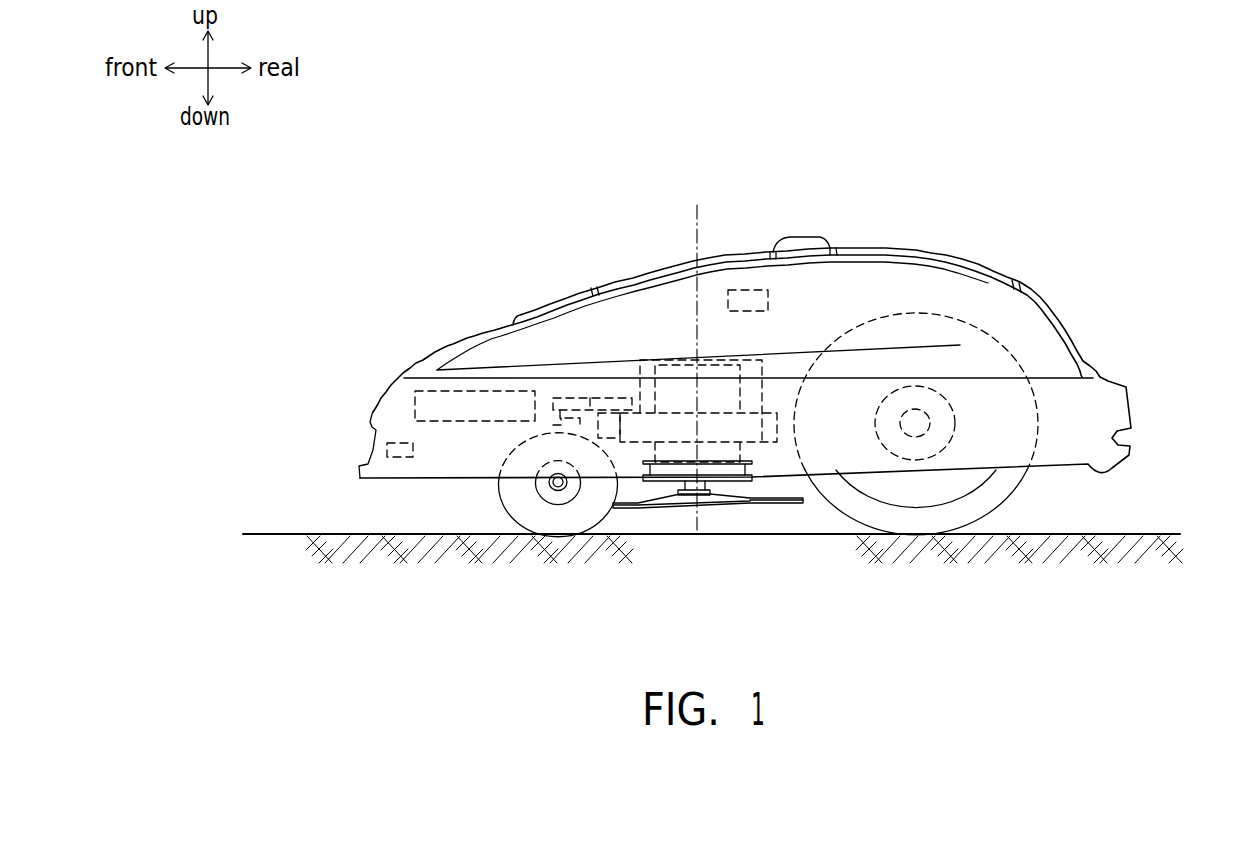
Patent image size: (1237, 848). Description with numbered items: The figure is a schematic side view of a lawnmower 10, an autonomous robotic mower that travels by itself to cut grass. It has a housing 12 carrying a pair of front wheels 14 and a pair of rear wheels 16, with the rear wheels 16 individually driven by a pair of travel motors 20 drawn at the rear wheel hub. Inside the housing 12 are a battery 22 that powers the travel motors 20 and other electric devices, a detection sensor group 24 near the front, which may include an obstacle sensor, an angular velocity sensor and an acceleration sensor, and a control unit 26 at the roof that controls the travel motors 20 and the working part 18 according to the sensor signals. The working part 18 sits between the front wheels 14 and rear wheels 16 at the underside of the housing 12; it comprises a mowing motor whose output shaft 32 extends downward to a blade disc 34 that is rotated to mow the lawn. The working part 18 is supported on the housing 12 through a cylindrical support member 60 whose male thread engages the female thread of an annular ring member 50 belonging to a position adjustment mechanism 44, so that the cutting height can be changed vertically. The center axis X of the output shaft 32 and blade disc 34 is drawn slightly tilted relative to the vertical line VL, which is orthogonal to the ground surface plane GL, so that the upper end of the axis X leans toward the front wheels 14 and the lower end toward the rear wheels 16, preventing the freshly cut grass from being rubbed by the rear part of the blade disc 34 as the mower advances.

The lawnmower 10 is at (380, 215).
The housing 12 is at (1103, 395).
The front wheels 14 is at (515, 498).
The rear wheels 16 is at (990, 497).
The working part 18 is at (710, 567).
The travel motors 20 is at (952, 408).
The battery 22 is at (485, 398).
The detection sensor group 24 is at (398, 440).
The control unit 26 is at (770, 297).
The output shaft 32 is at (708, 486).
The blade disc 34 is at (683, 500).
The position adjustment mechanism 44 is at (774, 391).
The annular ring member 50 is at (763, 445).
The support member 60 is at (650, 395).
The center axis X is at (691, 406).
The vertical line VL is at (696, 212).
The ground surface plane GL is at (1160, 533).